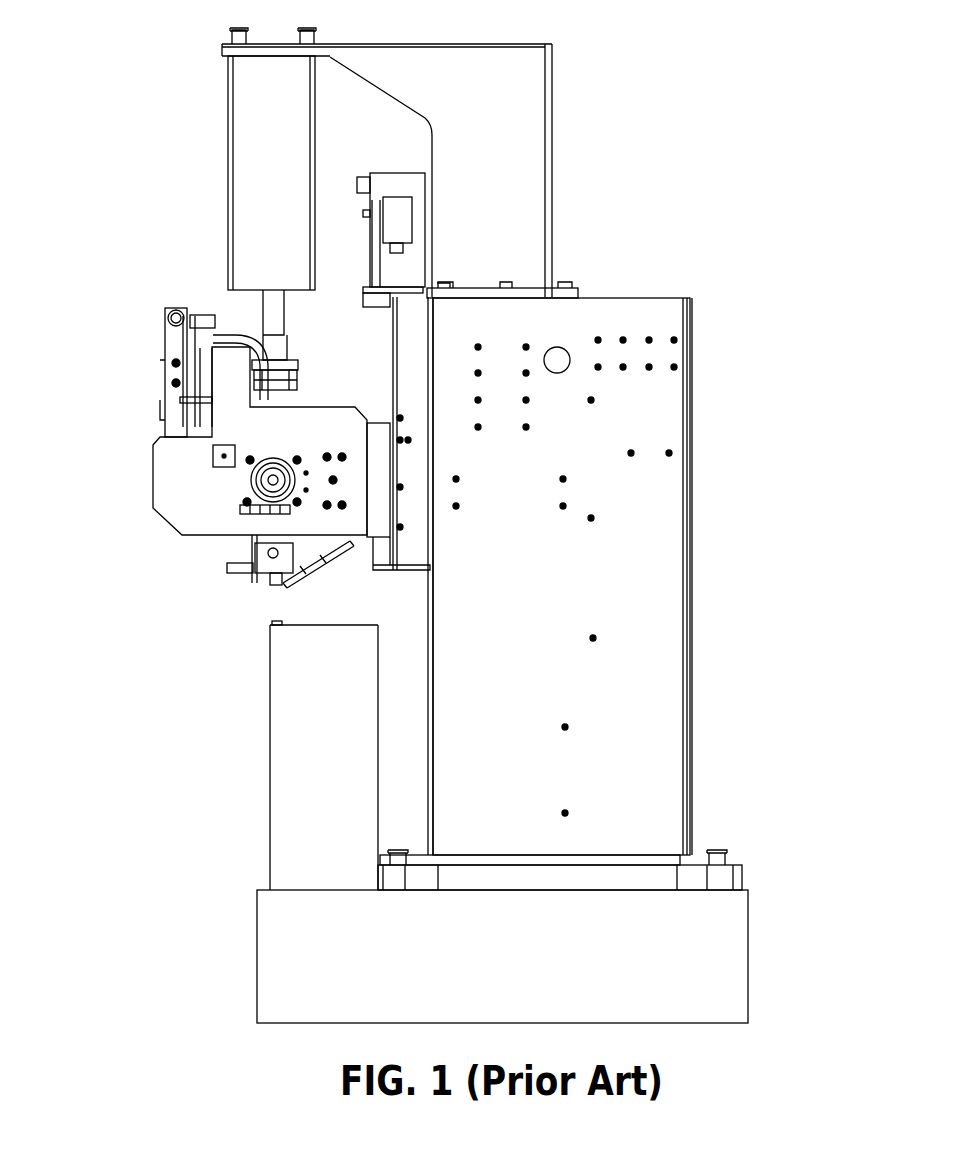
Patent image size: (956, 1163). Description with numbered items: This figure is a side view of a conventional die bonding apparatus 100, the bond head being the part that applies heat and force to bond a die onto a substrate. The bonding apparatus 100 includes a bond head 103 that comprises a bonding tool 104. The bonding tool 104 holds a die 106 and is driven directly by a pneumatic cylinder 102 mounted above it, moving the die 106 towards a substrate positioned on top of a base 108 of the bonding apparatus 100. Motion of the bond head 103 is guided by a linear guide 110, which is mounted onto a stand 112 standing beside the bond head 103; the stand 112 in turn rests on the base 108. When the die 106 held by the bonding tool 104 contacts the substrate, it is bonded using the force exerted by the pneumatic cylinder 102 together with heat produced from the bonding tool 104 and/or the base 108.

The die bonding apparatus 100 is at (692, 98).
The pneumatic cylinder 102 is at (258, 182).
The bond head 103 is at (133, 472).
The bonding tool 104 is at (253, 567).
The die 106 is at (267, 630).
The base 108 is at (300, 823).
The linear guide 110 is at (407, 387).
The stand 112 is at (630, 530).